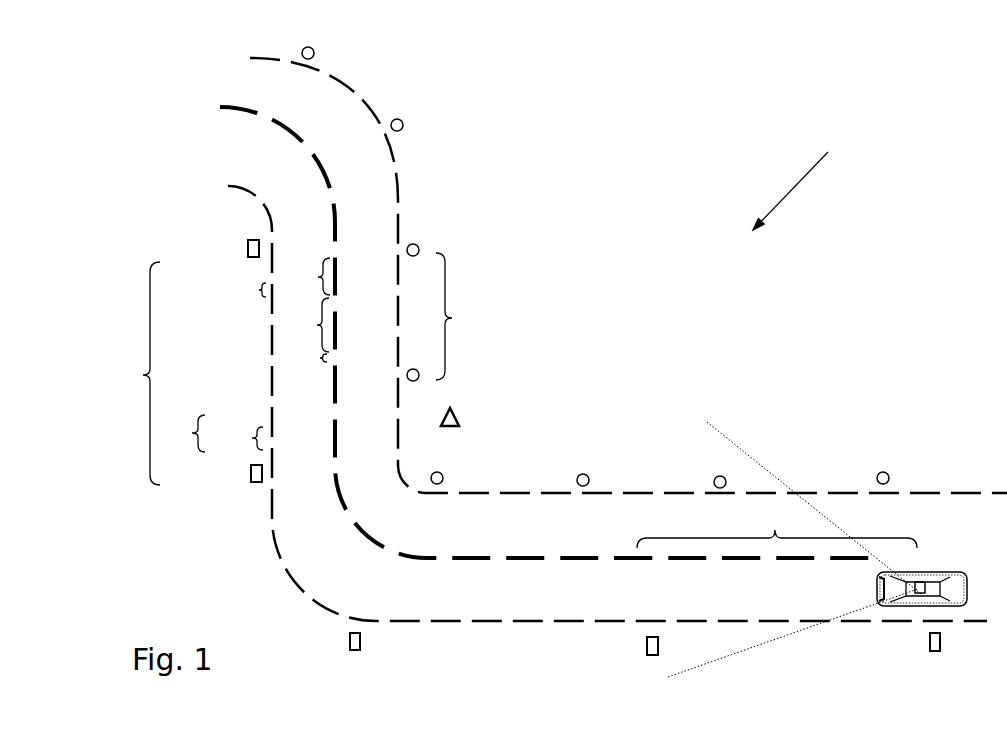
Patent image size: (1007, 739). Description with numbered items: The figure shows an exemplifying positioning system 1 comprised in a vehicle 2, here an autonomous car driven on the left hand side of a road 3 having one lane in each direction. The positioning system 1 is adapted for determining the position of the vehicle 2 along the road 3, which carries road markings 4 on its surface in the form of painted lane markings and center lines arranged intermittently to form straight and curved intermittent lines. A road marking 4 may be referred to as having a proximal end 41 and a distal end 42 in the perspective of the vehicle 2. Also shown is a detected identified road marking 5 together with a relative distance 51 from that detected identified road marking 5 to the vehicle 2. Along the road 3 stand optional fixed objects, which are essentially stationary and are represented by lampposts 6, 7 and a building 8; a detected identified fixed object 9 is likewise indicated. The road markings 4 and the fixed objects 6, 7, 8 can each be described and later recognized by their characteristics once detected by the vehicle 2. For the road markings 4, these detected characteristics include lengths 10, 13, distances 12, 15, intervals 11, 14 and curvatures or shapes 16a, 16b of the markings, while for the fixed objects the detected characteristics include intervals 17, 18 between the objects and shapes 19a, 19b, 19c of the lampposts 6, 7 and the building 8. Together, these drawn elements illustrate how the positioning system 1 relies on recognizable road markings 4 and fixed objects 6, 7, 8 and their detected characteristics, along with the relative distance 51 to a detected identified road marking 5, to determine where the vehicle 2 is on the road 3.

The positioning system 1 is at (921, 581).
The vehicle 2 is at (937, 573).
The road 3 is at (800, 186).
The road markings 4 is at (593, 360).
The detected identified road marking 5 is at (630, 563).
The fixed object (lamppost) 6 is at (619, 267).
The fixed object (lamppost) 7 is at (572, 465).
The fixed object (building) 8 is at (495, 403).
The detected identified fixed object 9 is at (590, 475).
The length of road marking 10 is at (252, 438).
The interval between road markings 11 is at (192, 433).
The distance between road markings 12 is at (246, 292).
The length of road marking 13 is at (311, 276).
The interval between road markings 14 is at (317, 325).
The distance between road markings 15 is at (309, 360).
The curvature or shape of road marking 16a is at (402, 192).
The curvature or shape of road marking 16b is at (277, 120).
The interval between fixed objects 17 is at (143, 375).
The interval between fixed objects 18 is at (452, 318).
The shape of fixed object 19a is at (402, 120).
The shape of fixed object 19b is at (252, 473).
The shape of fixed object 19c is at (455, 413).
The proximal end of road marking 41 is at (760, 562).
The distal end of road marking 42 is at (723, 562).
The relative distance 51 is at (777, 525).